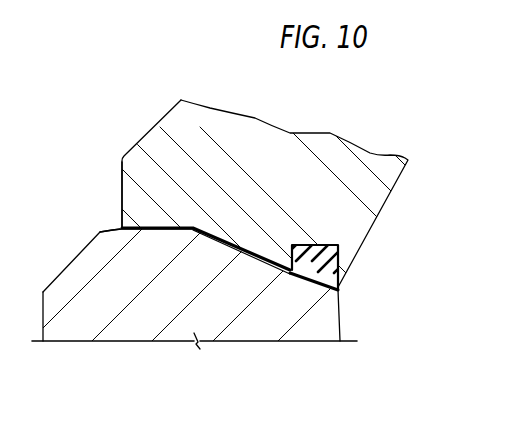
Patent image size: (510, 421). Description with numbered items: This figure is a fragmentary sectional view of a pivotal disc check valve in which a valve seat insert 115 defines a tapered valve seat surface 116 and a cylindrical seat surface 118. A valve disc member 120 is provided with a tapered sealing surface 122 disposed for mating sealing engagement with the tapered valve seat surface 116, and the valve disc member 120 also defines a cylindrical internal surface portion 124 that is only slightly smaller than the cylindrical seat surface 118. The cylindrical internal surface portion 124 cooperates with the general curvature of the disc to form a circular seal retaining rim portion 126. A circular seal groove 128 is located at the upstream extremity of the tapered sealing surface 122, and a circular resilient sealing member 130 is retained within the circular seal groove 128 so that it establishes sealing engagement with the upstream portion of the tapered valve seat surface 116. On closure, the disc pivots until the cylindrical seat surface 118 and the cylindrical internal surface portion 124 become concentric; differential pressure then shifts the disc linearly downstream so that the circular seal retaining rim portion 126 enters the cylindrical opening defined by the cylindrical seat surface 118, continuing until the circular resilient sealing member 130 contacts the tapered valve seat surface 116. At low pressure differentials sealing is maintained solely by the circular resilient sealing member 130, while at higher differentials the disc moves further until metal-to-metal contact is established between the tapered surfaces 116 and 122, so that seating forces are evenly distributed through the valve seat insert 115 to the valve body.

The valve seat insert 115 is at (285, 317).
The tapered valve seat surface 116 is at (243, 249).
The cylindrical seat surface 118 is at (110, 232).
The valve disc member 120 is at (183, 118).
The tapered sealing surface 122 is at (196, 341).
The cylindrical internal surface portion 124 is at (147, 232).
The circular seal retaining rim portion 126 is at (133, 183).
The circular seal groove 128 is at (305, 245).
The circular resilient sealing member 130 is at (340, 272).